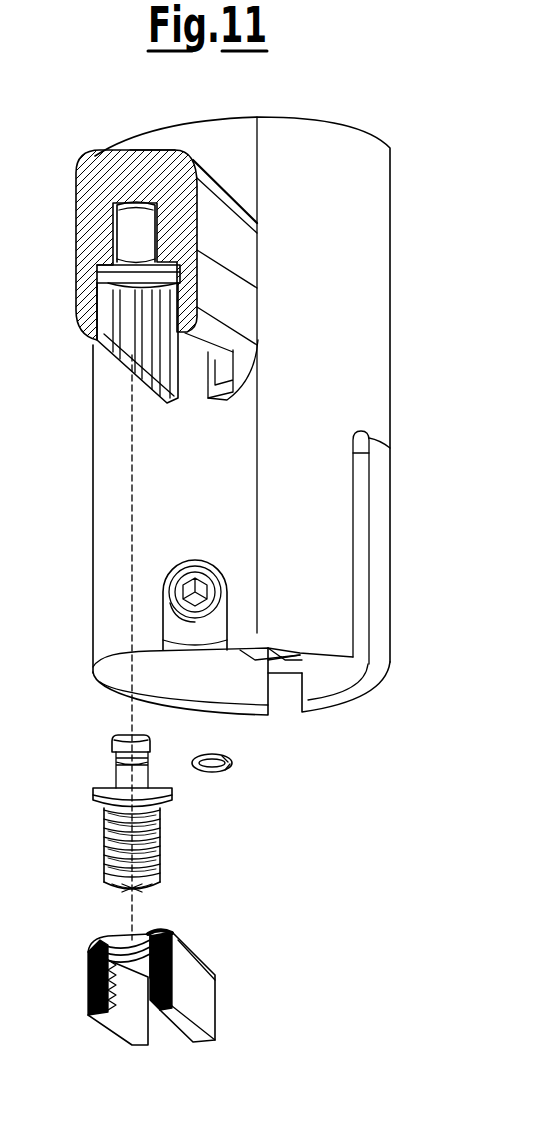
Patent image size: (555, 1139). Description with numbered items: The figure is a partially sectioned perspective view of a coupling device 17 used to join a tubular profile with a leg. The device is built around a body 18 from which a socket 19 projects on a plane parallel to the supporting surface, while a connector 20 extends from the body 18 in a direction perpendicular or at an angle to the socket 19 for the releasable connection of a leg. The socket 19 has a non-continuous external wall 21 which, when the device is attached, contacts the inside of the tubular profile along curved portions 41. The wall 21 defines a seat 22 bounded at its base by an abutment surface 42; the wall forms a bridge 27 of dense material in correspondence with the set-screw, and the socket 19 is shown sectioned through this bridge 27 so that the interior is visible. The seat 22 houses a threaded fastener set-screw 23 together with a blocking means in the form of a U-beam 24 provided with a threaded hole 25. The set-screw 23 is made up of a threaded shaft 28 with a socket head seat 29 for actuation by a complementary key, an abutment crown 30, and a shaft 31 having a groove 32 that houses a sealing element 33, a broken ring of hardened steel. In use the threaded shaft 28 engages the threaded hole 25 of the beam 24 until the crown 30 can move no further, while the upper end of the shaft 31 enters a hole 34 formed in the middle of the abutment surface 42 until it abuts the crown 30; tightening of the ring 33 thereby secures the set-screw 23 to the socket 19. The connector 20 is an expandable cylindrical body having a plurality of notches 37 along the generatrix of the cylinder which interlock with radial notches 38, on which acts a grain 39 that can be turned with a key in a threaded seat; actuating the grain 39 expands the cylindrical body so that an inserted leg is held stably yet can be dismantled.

The coupling device 17 is at (337, 97).
The body 18 is at (369, 151).
The socket 19 is at (88, 166).
The connector 20 is at (325, 527).
The external wall 21 is at (243, 253).
The seat 22 is at (106, 328).
The threaded fastener set-screw 23 is at (162, 838).
The U-beam 24 is at (205, 1001).
The threaded hole 25 is at (125, 942).
The bridge 27 is at (139, 167).
The threaded shaft 28 is at (115, 852).
The socket head seat 29 is at (136, 890).
The abutment crown 30 is at (98, 793).
The shaft 31 is at (118, 743).
The groove 32 is at (114, 761).
The sealing element 33 is at (224, 768).
The hole 34 is at (120, 230).
The notches 37 is at (358, 605).
The radial notches 38 is at (280, 663).
The grain 39 is at (196, 562).
The curved portions 41 is at (230, 192).
The abutment surface 42 is at (136, 297).